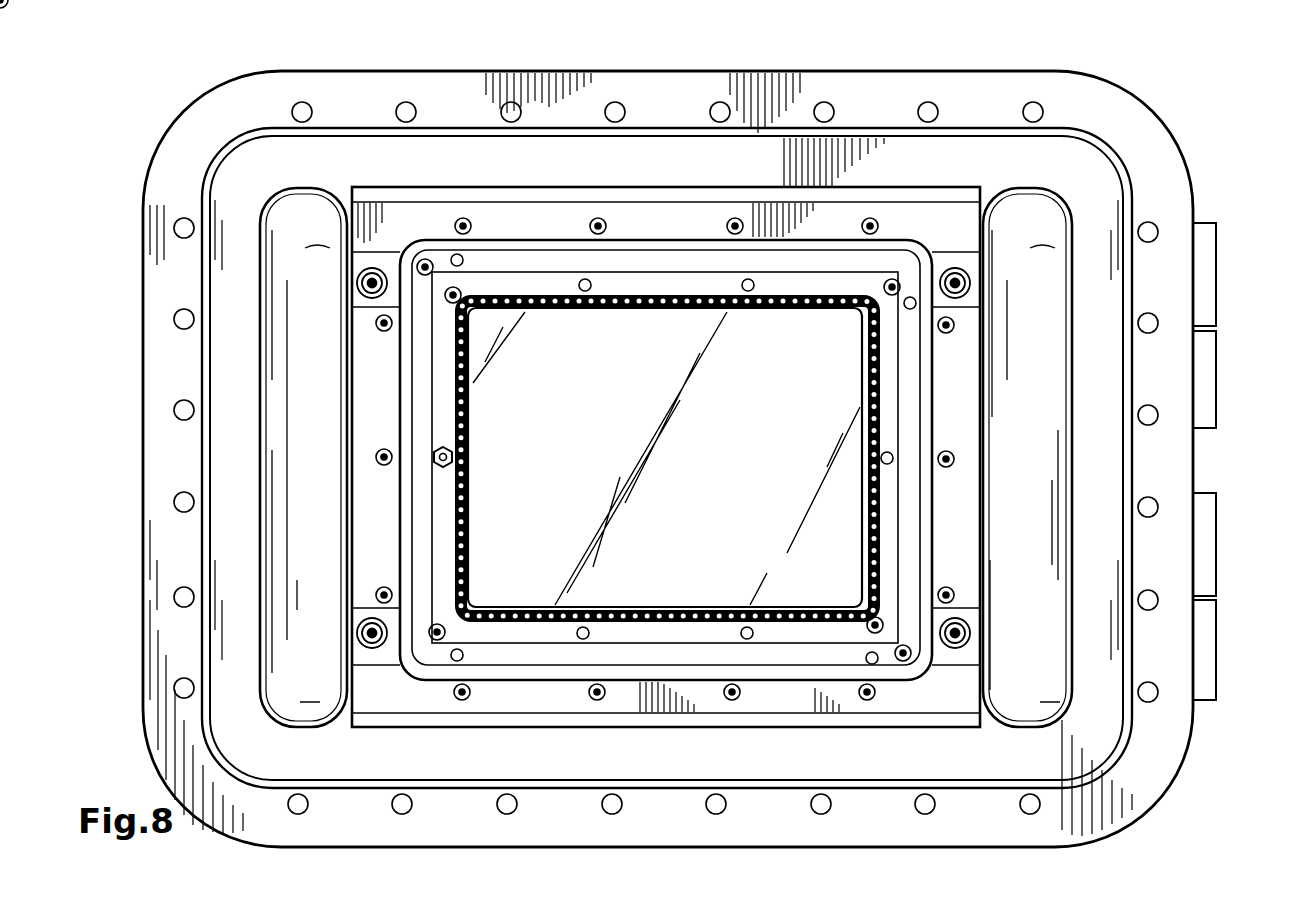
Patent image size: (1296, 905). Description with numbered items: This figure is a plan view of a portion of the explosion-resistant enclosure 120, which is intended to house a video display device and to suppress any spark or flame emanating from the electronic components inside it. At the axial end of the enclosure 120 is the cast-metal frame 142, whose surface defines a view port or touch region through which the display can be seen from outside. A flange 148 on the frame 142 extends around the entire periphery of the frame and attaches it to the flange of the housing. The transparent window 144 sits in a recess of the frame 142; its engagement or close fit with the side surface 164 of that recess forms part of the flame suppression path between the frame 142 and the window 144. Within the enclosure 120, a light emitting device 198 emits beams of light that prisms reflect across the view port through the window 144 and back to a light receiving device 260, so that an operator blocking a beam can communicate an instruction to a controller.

The explosion-resistant enclosure 120 is at (917, 70).
The frame 142 is at (1020, 165).
The transparent window 144 is at (734, 456).
The flange 148 is at (1165, 192).
The side surface 164 is at (767, 277).
The light emitting device 198 is at (865, 547).
The light receiving device 260 is at (570, 312).